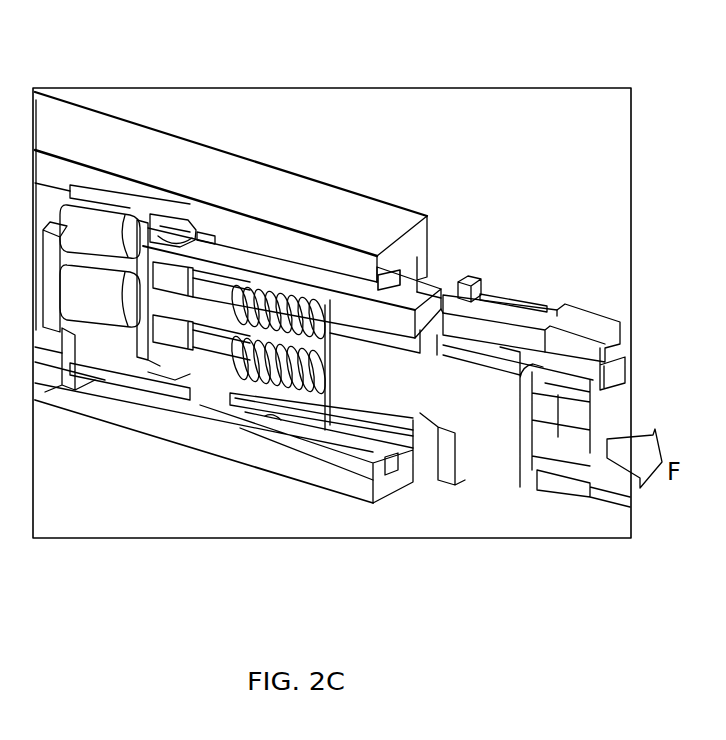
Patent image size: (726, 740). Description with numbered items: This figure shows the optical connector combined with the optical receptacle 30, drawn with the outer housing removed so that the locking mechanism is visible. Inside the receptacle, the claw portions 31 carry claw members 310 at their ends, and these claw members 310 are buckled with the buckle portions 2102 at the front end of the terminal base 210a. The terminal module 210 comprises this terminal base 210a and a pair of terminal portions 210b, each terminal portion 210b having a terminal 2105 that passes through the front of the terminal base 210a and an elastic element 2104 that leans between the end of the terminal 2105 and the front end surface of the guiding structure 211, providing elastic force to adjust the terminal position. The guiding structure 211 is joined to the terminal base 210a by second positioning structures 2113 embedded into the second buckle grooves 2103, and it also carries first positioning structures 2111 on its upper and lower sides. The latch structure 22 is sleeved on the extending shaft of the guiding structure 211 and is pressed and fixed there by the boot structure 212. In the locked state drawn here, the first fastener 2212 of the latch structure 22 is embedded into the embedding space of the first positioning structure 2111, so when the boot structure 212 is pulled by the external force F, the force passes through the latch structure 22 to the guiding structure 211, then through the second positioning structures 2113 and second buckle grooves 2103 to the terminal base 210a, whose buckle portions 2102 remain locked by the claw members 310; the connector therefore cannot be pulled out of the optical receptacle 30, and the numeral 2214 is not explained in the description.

The optical receptacle 30 is at (348, 209).
The claw portion 31 is at (139, 198).
The claw member 310 is at (173, 232).
The buckle portion 2102 is at (203, 238).
The second buckle groove 2103 is at (394, 272).
The second positioning structure 2113 is at (398, 275).
The guiding structure 211 is at (428, 380).
The terminal module 210 is at (193, 567).
The terminal base 210a is at (257, 406).
The terminal portion 210b is at (206, 356).
The elastic element 2104 is at (281, 368).
The terminal 2105 is at (177, 340).
The protrusion 2214 is at (470, 265).
The first fastener 2212 is at (497, 266).
The first positioning structure 2111 is at (523, 302).
The boot structure 212 is at (612, 390).
The latch structure 22 is at (543, 508).